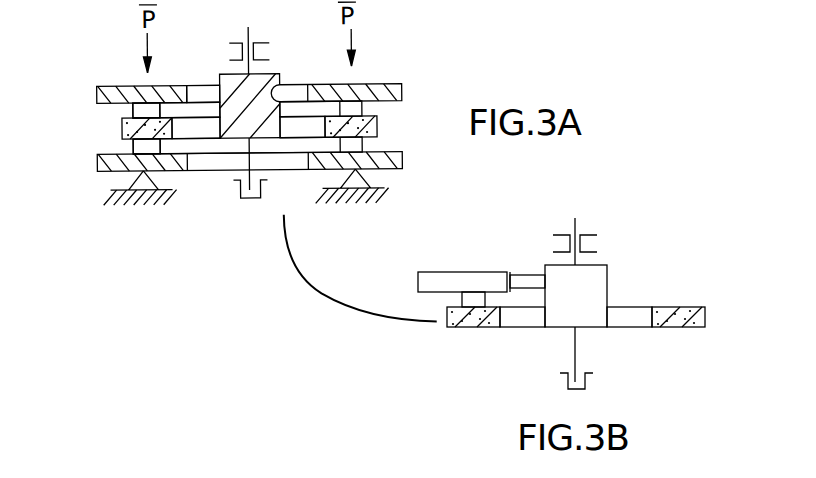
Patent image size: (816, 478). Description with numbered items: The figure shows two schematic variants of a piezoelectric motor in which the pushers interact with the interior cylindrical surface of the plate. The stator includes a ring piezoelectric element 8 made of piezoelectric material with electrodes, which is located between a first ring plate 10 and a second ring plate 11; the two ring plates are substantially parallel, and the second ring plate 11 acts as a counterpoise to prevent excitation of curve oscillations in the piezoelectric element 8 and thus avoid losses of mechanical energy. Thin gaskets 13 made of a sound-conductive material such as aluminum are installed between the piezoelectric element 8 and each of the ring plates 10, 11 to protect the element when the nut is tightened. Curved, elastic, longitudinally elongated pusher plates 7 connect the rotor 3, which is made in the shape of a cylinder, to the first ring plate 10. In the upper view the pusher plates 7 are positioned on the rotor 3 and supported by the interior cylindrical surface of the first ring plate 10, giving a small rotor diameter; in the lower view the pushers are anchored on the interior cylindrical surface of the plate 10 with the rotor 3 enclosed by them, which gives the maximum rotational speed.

In FIG. 3A, the rotor 3 is at (262, 80).
In FIG. 3B, the rotor 3 is at (597, 282).
In FIG. 3A, the pusher plates 7 is at (208, 88).
In FIG. 3A, the ring piezoelectric element 8 is at (172, 130).
In FIG. 3B, the ring piezoelectric element 8 is at (470, 328).
In FIG. 3A, the first ring plate 10 is at (122, 95).
In FIG. 3B, the first ring plate 10 is at (455, 279).
In FIG. 3A, the second ring plate 11 is at (225, 207).
In FIG. 3A, the gaskets 13 is at (133, 148).